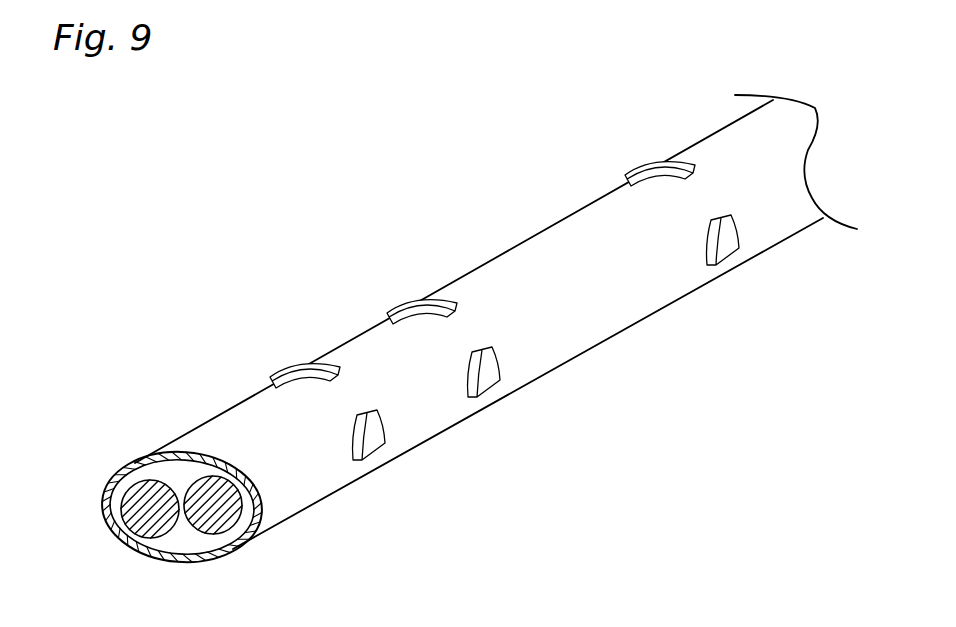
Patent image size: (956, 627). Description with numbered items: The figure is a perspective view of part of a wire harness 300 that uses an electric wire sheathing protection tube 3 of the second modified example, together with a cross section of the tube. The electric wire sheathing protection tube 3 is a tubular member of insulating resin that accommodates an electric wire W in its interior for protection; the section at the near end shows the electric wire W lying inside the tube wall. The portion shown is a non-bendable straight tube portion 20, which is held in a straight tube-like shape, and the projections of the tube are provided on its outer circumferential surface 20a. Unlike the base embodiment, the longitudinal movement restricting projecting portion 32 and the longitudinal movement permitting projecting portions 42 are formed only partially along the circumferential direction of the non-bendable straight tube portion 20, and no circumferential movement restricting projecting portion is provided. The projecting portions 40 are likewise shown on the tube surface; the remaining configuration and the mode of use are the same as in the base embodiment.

The wire harness 300 is at (465, 325).
The non-bendable straight tube portion 20 is at (451, 204).
The outer circumferential surface 20a is at (648, 247).
The electric wire W is at (210, 500).
The longitudinal movement restricting projecting portion 32 is at (322, 352).
The fastening member 40 is at (631, 228).
The longitudinal movement permitting projecting portion 42 is at (713, 245).
The electric wire sheathing protection tube 3 is at (380, 192).